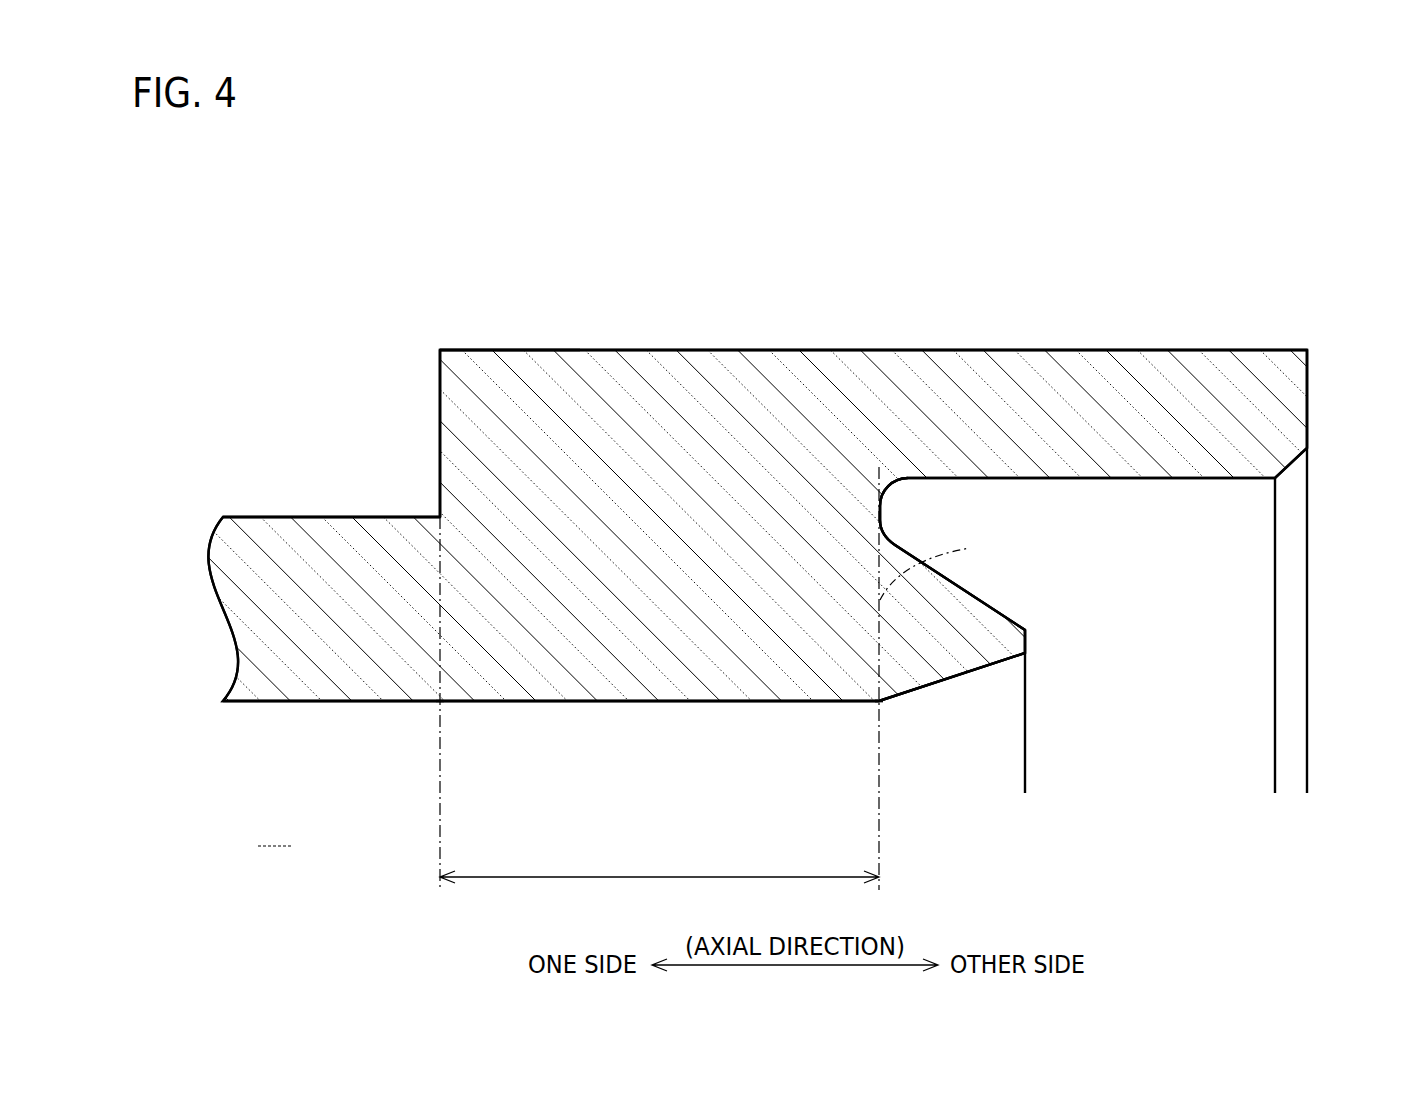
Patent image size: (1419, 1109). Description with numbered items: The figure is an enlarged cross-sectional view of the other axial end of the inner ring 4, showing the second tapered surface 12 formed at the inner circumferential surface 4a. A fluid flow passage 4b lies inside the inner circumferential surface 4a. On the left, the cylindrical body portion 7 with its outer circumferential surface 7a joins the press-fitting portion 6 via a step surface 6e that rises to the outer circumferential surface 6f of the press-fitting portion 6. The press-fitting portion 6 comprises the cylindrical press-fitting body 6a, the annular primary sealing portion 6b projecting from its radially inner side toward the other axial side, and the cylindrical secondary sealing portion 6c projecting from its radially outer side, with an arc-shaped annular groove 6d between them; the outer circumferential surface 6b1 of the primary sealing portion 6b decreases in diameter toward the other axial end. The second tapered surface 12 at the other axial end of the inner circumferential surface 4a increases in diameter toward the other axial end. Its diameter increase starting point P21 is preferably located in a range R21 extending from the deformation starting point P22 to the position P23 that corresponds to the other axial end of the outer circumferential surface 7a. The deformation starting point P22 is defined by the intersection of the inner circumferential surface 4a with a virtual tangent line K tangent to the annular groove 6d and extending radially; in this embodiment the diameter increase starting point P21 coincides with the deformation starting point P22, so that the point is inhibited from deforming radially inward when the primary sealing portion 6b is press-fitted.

The inner ring 4 is at (1153, 213).
The inner circumferential surface 4a is at (662, 716).
The fluid flow passage 4b is at (275, 832).
The press-fitting portion 6 is at (798, 336).
The press-fitting body 6a is at (604, 360).
The primary sealing portion 6b is at (1025, 632).
The outer circumferential surface of the primary sealing portion 6b1 is at (980, 598).
The secondary sealing portion 6c is at (1290, 398).
The annular groove 6d is at (880, 512).
The step surface 6e is at (440, 403).
The outer circumferential surface of the press-fitting portion 6f is at (524, 350).
The body portion 7 is at (330, 528).
The outer circumferential surface of the body portion 7a is at (272, 517).
The second tapered surface 12 is at (955, 678).
The virtual tangent line K is at (942, 566).
The diameter increase starting point P21 is at (879, 701).
The deformation starting point P22 is at (918, 762).
The position corresponding to the other axial end of the outer circumferential surfa P23 is at (440, 700).
The range R21 is at (659, 865).